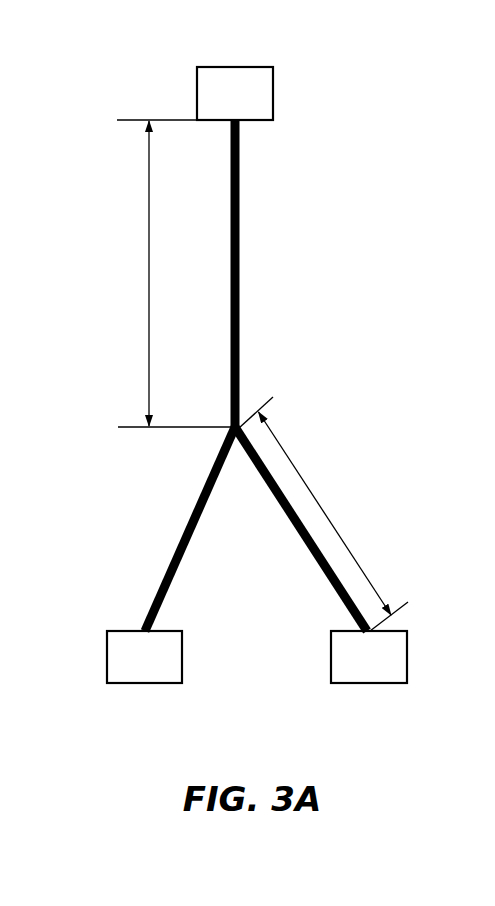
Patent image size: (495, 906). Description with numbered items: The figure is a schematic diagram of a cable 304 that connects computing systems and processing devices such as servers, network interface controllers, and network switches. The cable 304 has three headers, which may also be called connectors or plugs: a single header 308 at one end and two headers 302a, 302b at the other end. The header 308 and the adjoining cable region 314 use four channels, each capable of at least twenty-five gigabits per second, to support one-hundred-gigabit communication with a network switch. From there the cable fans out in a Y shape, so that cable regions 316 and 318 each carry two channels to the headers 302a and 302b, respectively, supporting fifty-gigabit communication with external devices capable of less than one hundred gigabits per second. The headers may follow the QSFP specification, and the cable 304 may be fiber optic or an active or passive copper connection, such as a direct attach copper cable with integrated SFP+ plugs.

The header 308 is at (233, 67).
The cable 304 is at (267, 279).
The cable region 314 is at (165, 273).
The cable region 316 is at (352, 535).
The cable region 318 is at (171, 535).
The header 302a is at (160, 684).
The header 302b is at (353, 684).